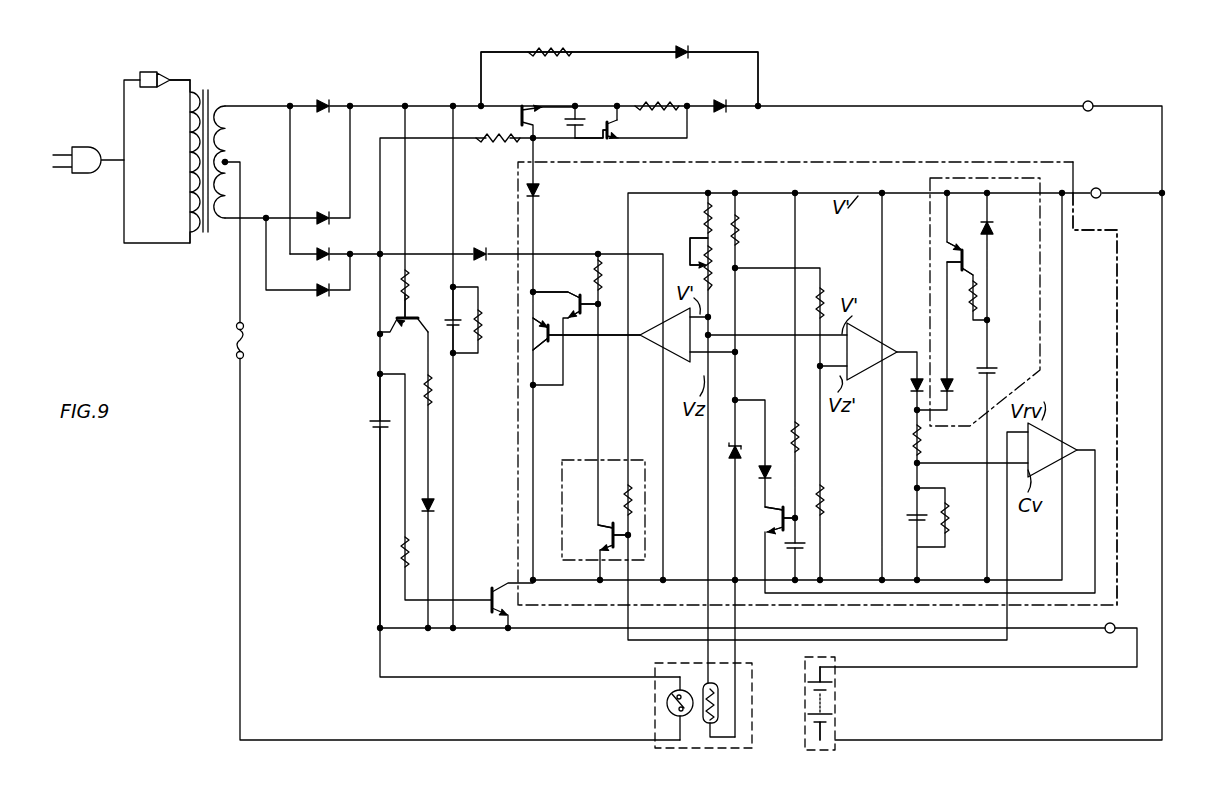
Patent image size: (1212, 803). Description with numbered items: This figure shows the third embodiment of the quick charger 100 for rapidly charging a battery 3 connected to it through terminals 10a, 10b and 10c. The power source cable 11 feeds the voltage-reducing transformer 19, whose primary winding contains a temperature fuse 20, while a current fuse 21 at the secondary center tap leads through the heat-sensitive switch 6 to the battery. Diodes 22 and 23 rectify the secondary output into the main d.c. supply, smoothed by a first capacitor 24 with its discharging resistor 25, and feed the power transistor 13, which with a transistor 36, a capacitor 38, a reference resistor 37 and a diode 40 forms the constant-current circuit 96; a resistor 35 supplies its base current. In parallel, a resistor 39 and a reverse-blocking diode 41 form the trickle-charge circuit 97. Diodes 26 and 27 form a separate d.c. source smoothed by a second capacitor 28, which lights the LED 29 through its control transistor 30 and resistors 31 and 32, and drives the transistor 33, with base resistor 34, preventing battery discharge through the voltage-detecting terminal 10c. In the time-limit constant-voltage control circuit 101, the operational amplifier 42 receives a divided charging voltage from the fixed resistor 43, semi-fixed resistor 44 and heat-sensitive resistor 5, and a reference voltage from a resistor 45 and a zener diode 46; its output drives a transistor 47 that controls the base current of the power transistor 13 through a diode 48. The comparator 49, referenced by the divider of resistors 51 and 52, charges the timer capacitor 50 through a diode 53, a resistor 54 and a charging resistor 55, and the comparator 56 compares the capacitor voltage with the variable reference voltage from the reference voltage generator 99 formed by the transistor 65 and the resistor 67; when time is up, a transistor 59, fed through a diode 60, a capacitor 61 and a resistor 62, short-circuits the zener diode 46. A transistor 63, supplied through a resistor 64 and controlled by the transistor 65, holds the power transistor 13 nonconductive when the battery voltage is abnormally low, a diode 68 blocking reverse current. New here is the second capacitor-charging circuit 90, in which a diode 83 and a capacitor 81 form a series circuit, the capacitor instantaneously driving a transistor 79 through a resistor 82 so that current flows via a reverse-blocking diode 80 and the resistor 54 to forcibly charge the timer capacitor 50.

The battery 3 is at (838, 704).
The heat-sensitive resistor 5 is at (709, 723).
The heat-sensitive switch 6 is at (672, 719).
The terminal 10a is at (1108, 633).
The terminal 10b is at (1092, 100).
The voltage-detecting terminal 10c is at (1098, 187).
The power source cable 11 is at (86, 148).
The power transistor 13 is at (530, 104).
The voltage-reducing transformer 19 is at (212, 97).
The temperature fuse 20 is at (148, 72).
The current fuse 21 is at (234, 342).
The diode 22 is at (322, 100).
The diode 23 is at (322, 211).
The first capacitor 24 is at (464, 312).
The discharging resistor 25 is at (483, 350).
The diode 26 is at (322, 251).
The diode 27 is at (322, 296).
The second capacitor 28 is at (368, 422).
The charging-indicating lamp 29 is at (440, 508).
The transistor 30 is at (396, 336).
The resistor 31 is at (410, 292).
The resistor 32 is at (432, 400).
The transistor 33 is at (486, 590).
The resistor 34 is at (402, 552).
The resistor 35 is at (498, 128).
The transistor 36 is at (610, 140).
The reference resistor 37 is at (656, 104).
The capacitor 38 is at (576, 116).
The resistor 39 is at (548, 48).
The diode 40 is at (720, 100).
The diode 41 is at (672, 50).
The operational amplifier 42 is at (676, 362).
The fixed resistor 43 is at (702, 222).
The semi-fixed resistor 44 is at (696, 264).
The resistor 45 is at (740, 224).
The zener diode 46 is at (726, 452).
The transistor 47 is at (556, 346).
The diode 48 is at (540, 200).
The comparator 49 is at (890, 342).
The timer capacitor 50 is at (902, 518).
The resistor 51 is at (835, 292).
The resistor 52 is at (826, 510).
The diode 53 is at (910, 394).
The resistor 54 is at (908, 440).
The charging resistor 55 is at (948, 520).
The comparator 56 is at (1042, 421).
The transistor 59 is at (776, 520).
The diode 60 is at (760, 476).
The capacitor 61 is at (808, 546).
The resistor 62 is at (786, 422).
The transistor 63 is at (570, 294).
The resistor 64 is at (588, 260).
The transistor 65 is at (602, 536).
The resistor 67 is at (622, 502).
The diode 68 is at (484, 250).
The transistor 79 is at (946, 260).
The diode 80 is at (950, 374).
The capacitor 81 is at (992, 368).
The resistor 82 is at (980, 298).
The diode 83 is at (992, 230).
The second capacitor-charging circuit 90 is at (926, 196).
The constant-current circuit 96 is at (712, 128).
The trickle-charge series circuit 97 is at (745, 50).
The reference voltage generator 99 is at (558, 468).
The quick charger 100 is at (953, 90).
The time-limit constant-voltage control circuit 101 is at (1120, 238).